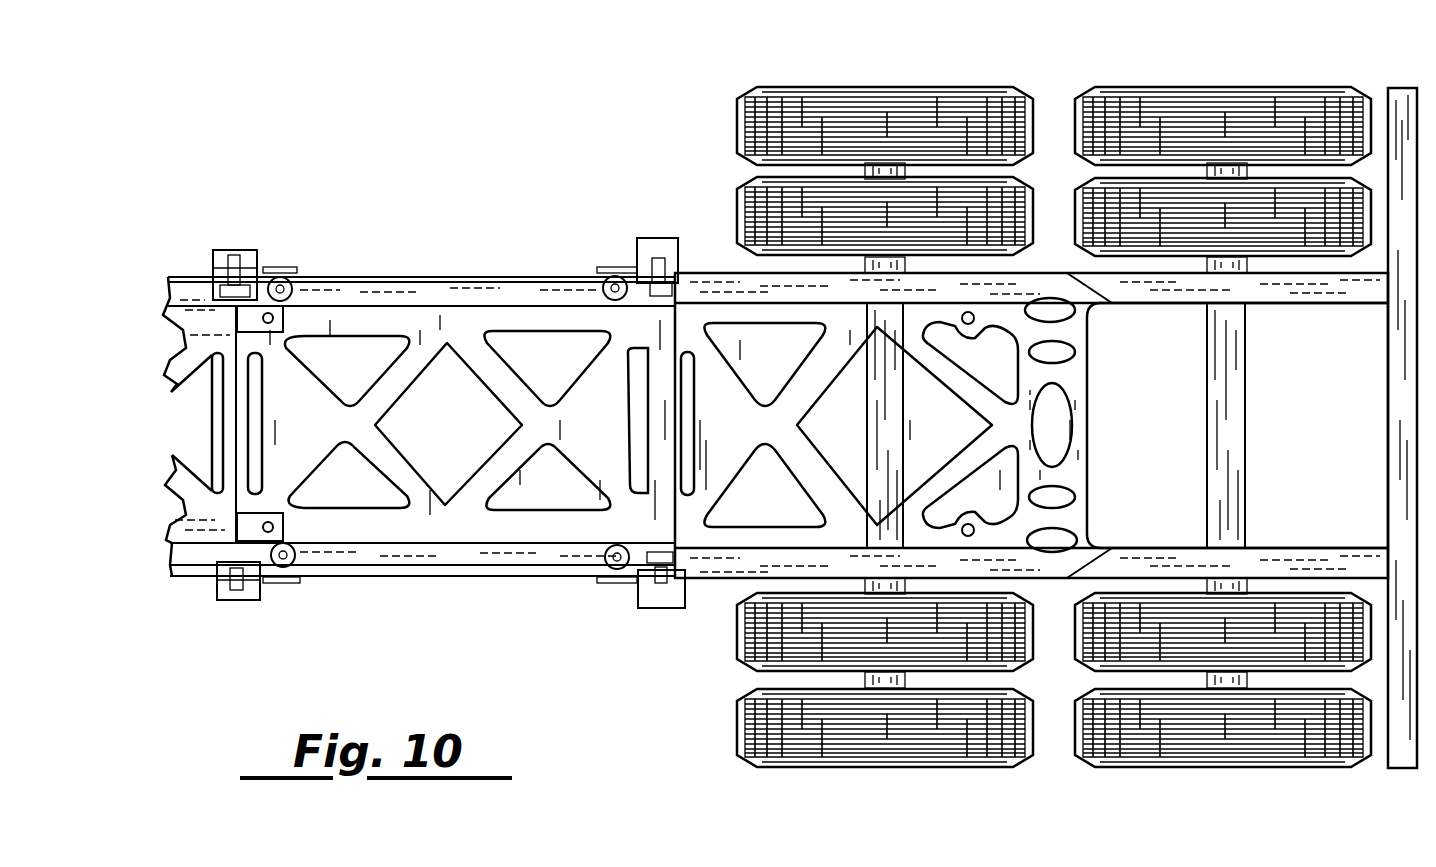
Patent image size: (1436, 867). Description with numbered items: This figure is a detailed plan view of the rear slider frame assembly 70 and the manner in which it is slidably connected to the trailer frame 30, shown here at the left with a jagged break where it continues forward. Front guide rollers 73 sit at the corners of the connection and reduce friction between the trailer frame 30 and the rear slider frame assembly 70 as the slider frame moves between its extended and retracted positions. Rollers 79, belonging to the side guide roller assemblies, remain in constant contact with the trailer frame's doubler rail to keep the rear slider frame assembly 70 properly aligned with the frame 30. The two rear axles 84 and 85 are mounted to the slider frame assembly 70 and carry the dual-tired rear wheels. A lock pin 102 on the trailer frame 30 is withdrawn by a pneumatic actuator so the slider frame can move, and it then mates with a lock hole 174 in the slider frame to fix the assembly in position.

The trailer frame 30 is at (185, 315).
The rear slider frame assembly 70 is at (630, 626).
The front guide roller 73 is at (213, 258).
The roller 79 is at (290, 277).
The rear axle 84 is at (900, 455).
The rear axle 85 is at (1245, 457).
The lock pin 102 is at (273, 318).
The lock hole 174 is at (975, 320).